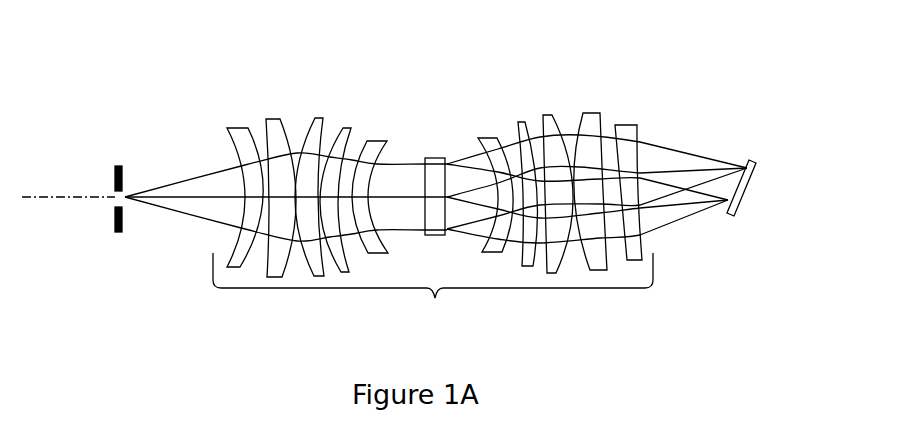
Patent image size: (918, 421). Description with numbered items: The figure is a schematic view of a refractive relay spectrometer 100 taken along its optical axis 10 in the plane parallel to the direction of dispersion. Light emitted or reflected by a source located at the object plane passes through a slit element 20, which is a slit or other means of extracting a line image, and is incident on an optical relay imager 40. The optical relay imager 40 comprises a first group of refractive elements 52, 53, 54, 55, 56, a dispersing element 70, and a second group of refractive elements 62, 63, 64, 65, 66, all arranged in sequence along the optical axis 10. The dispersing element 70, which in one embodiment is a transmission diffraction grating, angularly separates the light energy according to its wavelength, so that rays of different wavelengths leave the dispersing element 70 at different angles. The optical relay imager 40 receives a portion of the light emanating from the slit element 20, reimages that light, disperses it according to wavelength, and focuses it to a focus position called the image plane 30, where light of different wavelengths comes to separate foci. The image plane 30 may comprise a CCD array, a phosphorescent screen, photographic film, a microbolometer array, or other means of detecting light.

The refractive relay spectrometer 100 is at (95, 63).
The optical axis 10 is at (72, 199).
The slit element 20 is at (113, 177).
The image plane 30 is at (748, 164).
The optical relay imager 40 is at (435, 298).
The refractive element 52 is at (233, 128).
The refractive element 53 is at (270, 118).
The refractive element 54 is at (317, 118).
The refractive element 55 is at (348, 128).
The refractive element 56 is at (377, 140).
The refractive element 62 is at (490, 138).
The refractive element 63 is at (520, 122).
The refractive element 64 is at (545, 115).
The refractive element 65 is at (592, 112).
The refractive element 66 is at (632, 120).
The dispersing element 70 is at (435, 158).